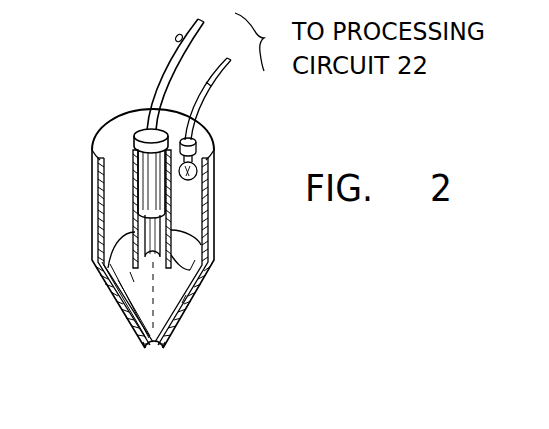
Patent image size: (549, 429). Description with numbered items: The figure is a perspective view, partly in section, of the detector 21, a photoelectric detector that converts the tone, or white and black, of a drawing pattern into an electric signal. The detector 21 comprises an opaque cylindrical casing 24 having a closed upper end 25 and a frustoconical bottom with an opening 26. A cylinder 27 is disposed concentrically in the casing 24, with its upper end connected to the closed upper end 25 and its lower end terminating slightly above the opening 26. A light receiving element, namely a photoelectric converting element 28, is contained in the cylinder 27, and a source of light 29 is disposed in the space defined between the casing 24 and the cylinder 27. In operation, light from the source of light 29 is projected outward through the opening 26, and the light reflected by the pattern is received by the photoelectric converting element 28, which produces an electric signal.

The detector 21 is at (96, 101).
The opaque cylindrical casing 24 is at (201, 245).
The closed upper end 25 is at (208, 142).
The opening 26 is at (154, 352).
The cylinder 27 is at (190, 270).
The photoelectric converting element 28 is at (134, 144).
The source of light 29 is at (196, 185).